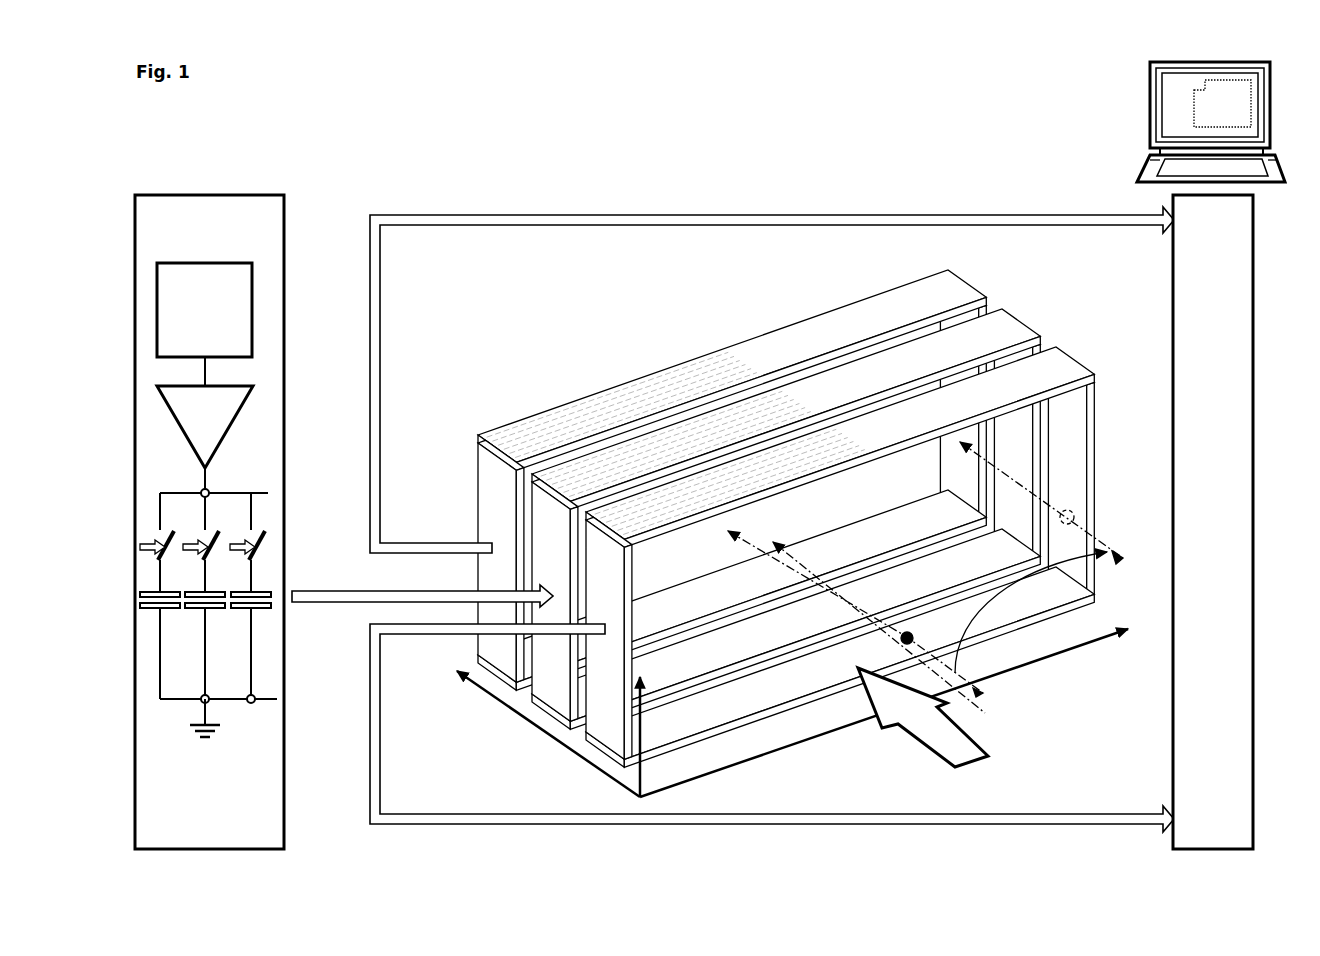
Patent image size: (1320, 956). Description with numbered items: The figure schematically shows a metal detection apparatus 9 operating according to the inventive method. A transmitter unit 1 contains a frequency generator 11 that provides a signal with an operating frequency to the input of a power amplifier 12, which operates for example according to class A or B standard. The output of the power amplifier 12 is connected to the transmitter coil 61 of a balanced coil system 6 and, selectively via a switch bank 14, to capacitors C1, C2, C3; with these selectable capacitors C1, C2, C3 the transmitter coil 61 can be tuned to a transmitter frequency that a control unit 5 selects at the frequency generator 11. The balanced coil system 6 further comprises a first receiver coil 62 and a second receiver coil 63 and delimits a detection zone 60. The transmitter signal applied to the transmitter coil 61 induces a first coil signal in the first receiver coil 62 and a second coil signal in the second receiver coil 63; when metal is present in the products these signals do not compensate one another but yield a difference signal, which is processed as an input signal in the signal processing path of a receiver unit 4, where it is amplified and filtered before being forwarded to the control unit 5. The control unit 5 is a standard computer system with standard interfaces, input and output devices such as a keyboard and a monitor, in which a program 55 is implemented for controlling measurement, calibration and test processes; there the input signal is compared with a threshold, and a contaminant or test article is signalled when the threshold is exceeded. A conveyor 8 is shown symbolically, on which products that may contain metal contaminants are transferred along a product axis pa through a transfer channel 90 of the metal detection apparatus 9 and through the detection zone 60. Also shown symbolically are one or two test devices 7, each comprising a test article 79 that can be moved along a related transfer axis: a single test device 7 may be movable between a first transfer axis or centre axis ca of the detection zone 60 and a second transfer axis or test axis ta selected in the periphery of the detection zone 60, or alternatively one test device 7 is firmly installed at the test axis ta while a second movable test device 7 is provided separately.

The transmitter unit 1 is at (209, 522).
The frequency generator 11 is at (204, 324).
The power amplifier 12 is at (205, 427).
The switch bank 14 is at (214, 494).
The capacitor C1 is at (255, 596).
The capacitor C2 is at (210, 615).
The capacitor C3 is at (165, 596).
The receiver unit 4 is at (772, 522).
The control unit 5 is at (1211, 122).
The program 55 is at (1222, 103).
The balanced coil system 6 is at (819, 502).
The detection zone 60 is at (819, 502).
The transmitter coil 61 is at (1052, 329).
The first receiver coil 62 is at (987, 291).
The second receiver coil 63 is at (1102, 364).
The test device 7 is at (805, 563).
The test article 79 is at (908, 631).
The conveyor 8 is at (953, 745).
The metal detection apparatus 9 is at (927, 163).
The transfer channel 90 is at (729, 631).
The test axis ta is at (1131, 566).
The centre axis ca is at (995, 697).
The product axis pa is at (1007, 721).